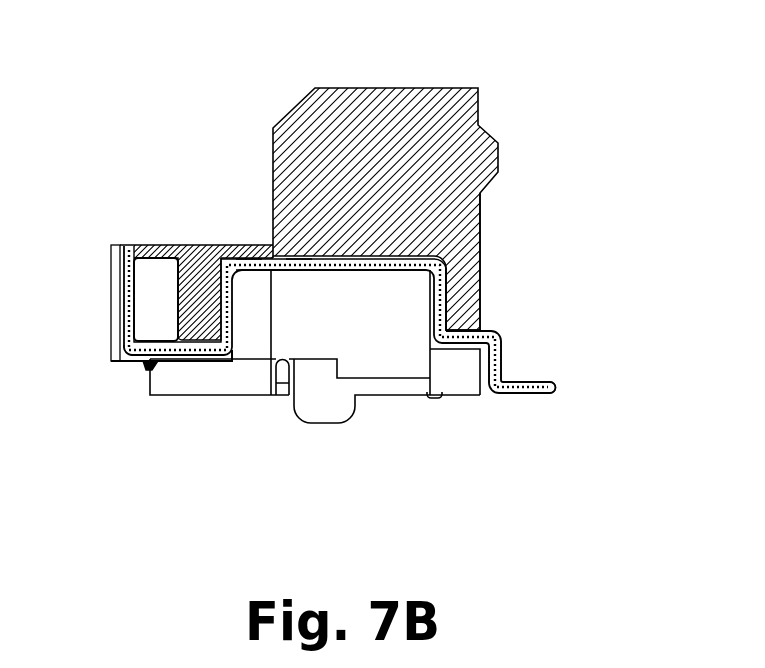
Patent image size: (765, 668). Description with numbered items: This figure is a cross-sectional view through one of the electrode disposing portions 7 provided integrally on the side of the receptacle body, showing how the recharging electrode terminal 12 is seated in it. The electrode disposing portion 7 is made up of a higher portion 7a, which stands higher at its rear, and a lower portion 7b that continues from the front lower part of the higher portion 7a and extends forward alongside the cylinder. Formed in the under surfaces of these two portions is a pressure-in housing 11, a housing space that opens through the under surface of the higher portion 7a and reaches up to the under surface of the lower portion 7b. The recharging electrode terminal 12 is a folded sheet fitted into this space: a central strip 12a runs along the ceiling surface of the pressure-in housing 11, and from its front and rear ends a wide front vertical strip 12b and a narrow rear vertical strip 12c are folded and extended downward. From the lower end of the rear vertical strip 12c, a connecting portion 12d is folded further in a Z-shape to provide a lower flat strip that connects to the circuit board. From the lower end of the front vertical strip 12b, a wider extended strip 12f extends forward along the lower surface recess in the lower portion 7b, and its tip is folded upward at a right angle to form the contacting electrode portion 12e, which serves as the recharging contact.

The electrode disposing portion 7 is at (447, 127).
The higher portion 7a is at (481, 215).
The lower portion 7b is at (233, 245).
The pressure-in housing 11 is at (417, 355).
The recharging electrode terminal 12 is at (380, 254).
The central strip 12a is at (298, 262).
The front vertical strip 12b is at (248, 270).
The rear vertical strip 12c is at (462, 303).
The connecting portion 12d is at (541, 378).
The contacting electrode portion 12e is at (111, 262).
The wider extended strip 12f is at (155, 362).